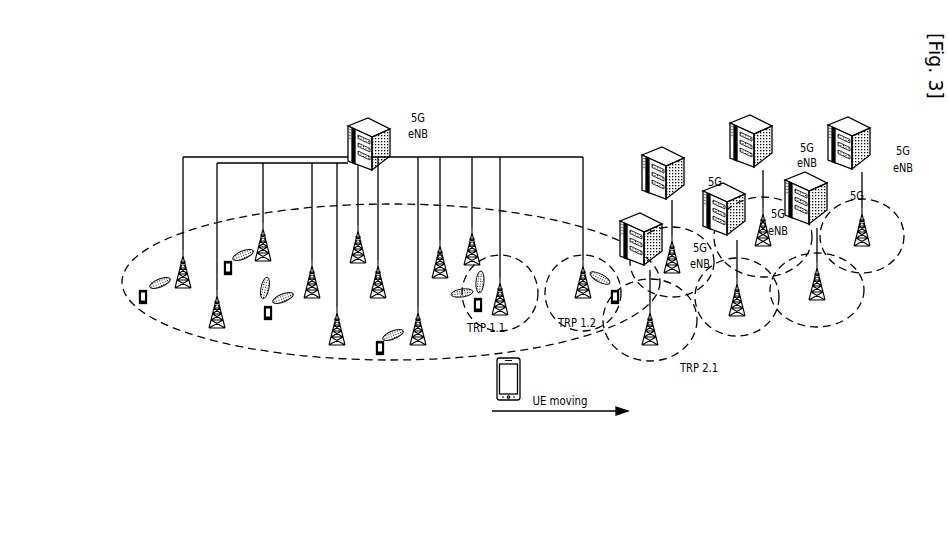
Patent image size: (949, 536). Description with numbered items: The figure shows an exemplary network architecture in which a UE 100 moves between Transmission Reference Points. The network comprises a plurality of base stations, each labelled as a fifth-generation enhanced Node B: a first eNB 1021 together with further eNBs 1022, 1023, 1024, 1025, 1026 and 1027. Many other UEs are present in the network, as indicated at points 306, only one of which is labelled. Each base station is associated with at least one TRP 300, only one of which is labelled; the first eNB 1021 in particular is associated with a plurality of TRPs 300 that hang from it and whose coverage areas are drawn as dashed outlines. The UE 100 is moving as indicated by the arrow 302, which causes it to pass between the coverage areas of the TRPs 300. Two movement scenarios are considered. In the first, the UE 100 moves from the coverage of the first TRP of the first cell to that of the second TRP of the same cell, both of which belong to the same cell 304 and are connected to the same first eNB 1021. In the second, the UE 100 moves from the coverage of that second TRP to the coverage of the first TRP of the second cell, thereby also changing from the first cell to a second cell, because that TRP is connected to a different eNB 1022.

The UE 100 is at (505, 377).
The first 5G eNB 1021 is at (367, 125).
The 5G eNB 1022 is at (637, 220).
The 5G eNB 1023 is at (662, 153).
The 5G eNB 1024 is at (727, 192).
The 5G eNB 1025 is at (745, 125).
The 5G eNB 1026 is at (813, 185).
The 5G eNB 1027 is at (855, 130).
The TRP 300 is at (330, 338).
The arrow 302 is at (602, 413).
The cell 304 is at (188, 336).
The UEs 306 is at (138, 300).